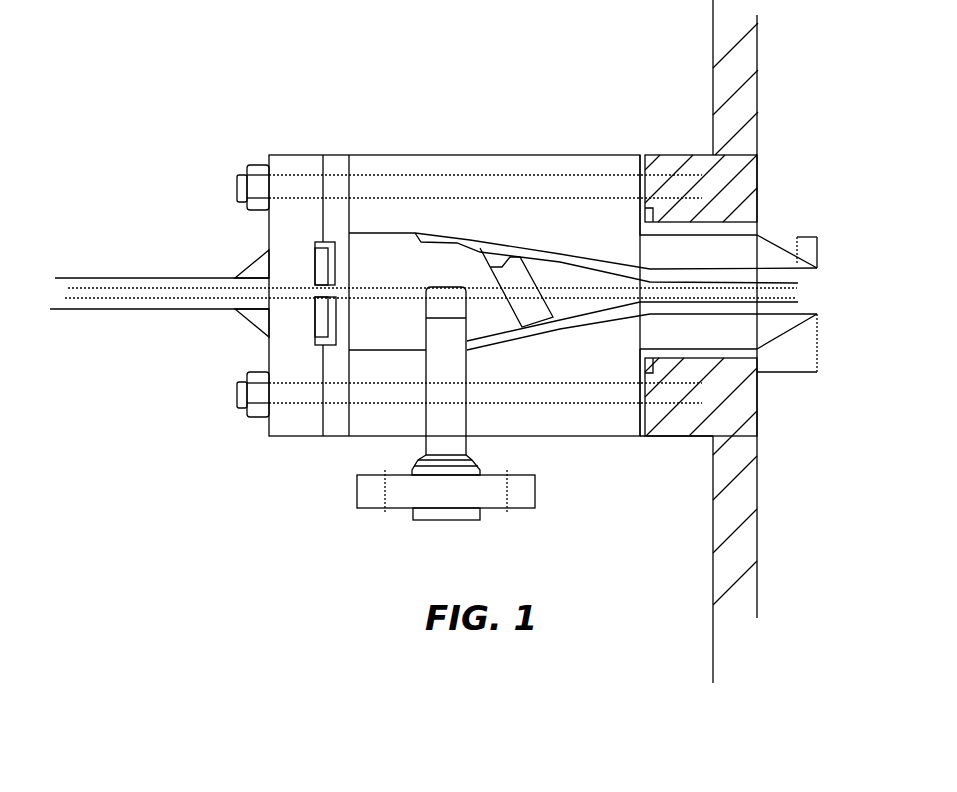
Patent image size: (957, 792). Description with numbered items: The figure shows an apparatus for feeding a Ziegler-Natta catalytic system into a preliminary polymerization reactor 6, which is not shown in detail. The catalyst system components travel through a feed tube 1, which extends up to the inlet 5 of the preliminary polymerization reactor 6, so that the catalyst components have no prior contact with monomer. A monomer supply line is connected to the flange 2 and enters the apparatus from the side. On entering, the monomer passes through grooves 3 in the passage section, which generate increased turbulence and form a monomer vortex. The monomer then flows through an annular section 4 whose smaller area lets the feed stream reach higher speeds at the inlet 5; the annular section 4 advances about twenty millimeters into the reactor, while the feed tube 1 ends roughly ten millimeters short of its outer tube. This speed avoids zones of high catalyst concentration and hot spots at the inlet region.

The feed tube 1 is at (66, 280).
The flange 2 is at (447, 520).
The grooves 3 is at (497, 265).
The annular section 4 is at (647, 313).
The inlet 5 is at (820, 302).
The preliminary polymerization reactor 6 is at (728, 153).